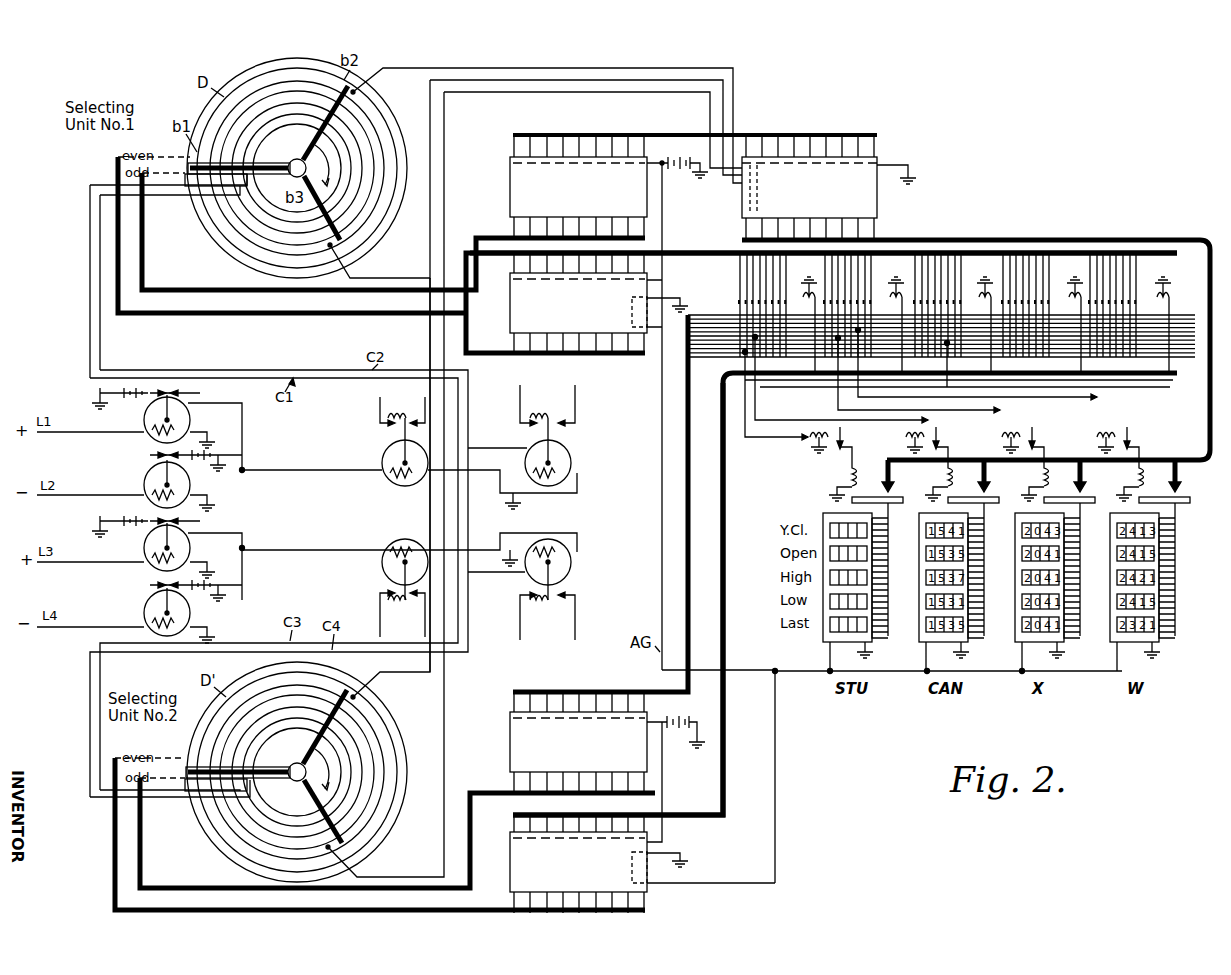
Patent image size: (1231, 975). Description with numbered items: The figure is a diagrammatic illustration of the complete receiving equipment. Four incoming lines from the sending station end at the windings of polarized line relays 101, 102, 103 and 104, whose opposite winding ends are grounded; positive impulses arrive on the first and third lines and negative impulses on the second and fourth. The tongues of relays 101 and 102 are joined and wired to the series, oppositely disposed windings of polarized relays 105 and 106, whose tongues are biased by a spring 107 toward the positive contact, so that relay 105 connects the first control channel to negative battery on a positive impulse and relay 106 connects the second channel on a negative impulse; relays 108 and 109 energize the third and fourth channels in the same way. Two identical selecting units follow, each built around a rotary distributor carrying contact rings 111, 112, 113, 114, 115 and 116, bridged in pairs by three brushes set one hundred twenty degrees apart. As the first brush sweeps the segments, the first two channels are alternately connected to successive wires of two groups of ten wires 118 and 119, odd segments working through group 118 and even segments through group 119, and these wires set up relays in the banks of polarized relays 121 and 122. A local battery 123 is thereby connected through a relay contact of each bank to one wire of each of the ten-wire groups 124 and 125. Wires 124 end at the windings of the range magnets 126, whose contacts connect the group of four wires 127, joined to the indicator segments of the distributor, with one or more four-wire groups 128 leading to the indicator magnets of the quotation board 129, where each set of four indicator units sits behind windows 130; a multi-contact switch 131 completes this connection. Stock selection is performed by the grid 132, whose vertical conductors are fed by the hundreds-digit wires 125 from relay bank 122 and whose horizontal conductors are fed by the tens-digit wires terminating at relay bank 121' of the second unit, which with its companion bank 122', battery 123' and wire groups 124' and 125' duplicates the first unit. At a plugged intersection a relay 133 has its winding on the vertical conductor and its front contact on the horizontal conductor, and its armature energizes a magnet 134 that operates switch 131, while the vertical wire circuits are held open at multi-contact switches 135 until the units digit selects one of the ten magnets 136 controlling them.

The polarized line relay 101 is at (190, 420).
The polarized line relay 102 is at (190, 488).
The polarized line relay 103 is at (190, 548).
The polarized line relay 104 is at (190, 615).
The polarized relay 105 is at (404, 478).
The polarized relay 106 is at (562, 466).
The spring 107 is at (404, 404).
The relay 108 is at (407, 546).
The relay 109 is at (560, 564).
The contact ring 111 is at (386, 106).
The contact ring 112 is at (379, 112).
The contact ring 113 is at (369, 118).
The contact ring 114 is at (368, 178).
The contact ring 115 is at (343, 194).
The contact ring 116 is at (350, 200).
The group of ten wires 118 is at (240, 290).
The group of ten wires 119 is at (195, 312).
The bank of polarized relays 121 is at (559, 186).
The bank of polarized relays 122 is at (562, 304).
The local battery 123 is at (677, 173).
The group of ten wires 124 is at (695, 131).
The group of ten wires 125 is at (823, 252).
The range magnets 126 is at (878, 208).
The group of four wires 127 is at (602, 78).
The four-wire groups 128 is at (832, 242).
The indicator or quotation board 129 is at (843, 584).
The openings or windows 130 is at (830, 630).
The multi-contact switch 131 is at (890, 488).
The grid arrangement 132 is at (712, 318).
The relay 133 is at (812, 443).
The magnet 134 is at (848, 482).
The multi-contact switches 135 is at (737, 301).
The magnets 136 is at (810, 283).
The relay bank 121' is at (560, 742).
The relay bank 122' is at (562, 864).
The battery 123' is at (682, 722).
The group of ten wires 124' is at (619, 503).
The group of ten wires 125' is at (641, 599).